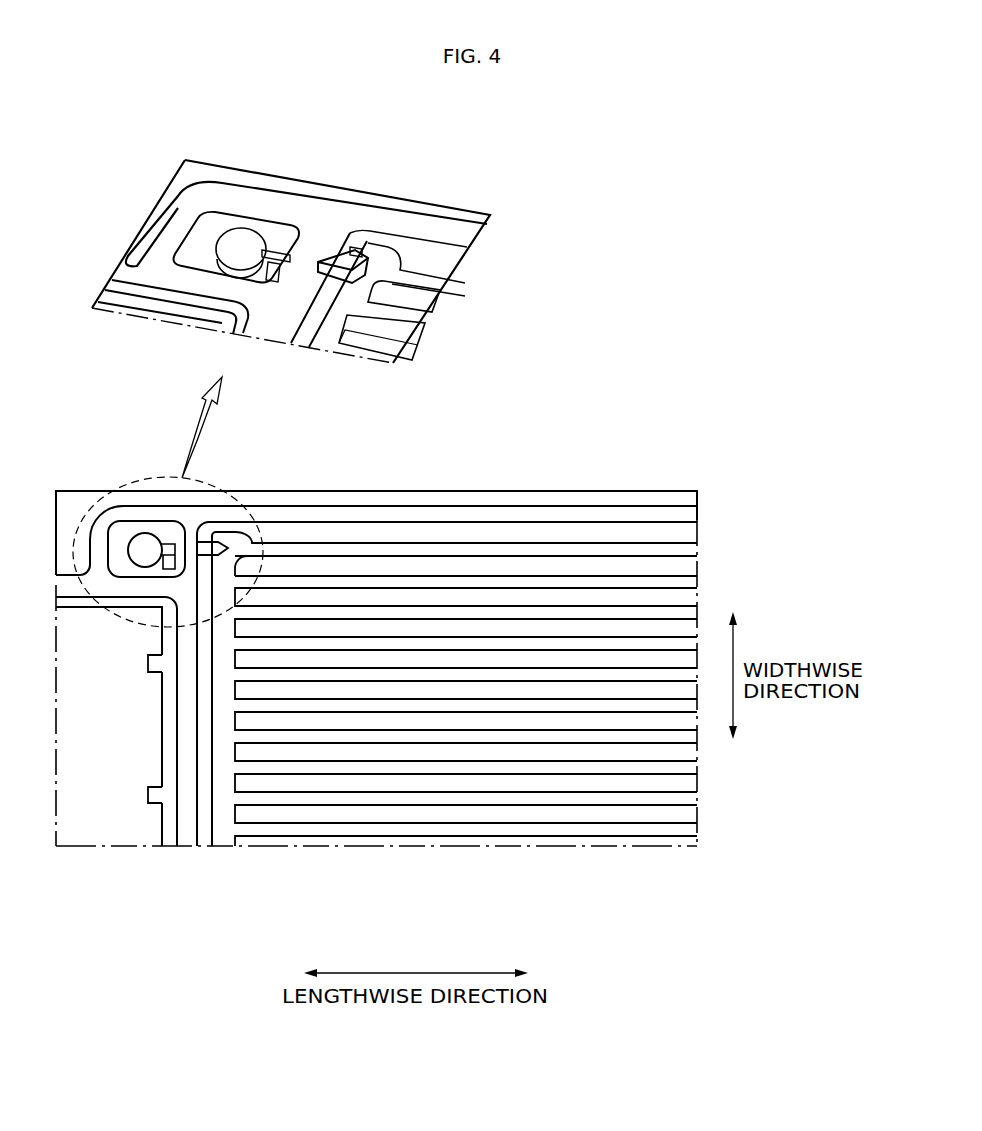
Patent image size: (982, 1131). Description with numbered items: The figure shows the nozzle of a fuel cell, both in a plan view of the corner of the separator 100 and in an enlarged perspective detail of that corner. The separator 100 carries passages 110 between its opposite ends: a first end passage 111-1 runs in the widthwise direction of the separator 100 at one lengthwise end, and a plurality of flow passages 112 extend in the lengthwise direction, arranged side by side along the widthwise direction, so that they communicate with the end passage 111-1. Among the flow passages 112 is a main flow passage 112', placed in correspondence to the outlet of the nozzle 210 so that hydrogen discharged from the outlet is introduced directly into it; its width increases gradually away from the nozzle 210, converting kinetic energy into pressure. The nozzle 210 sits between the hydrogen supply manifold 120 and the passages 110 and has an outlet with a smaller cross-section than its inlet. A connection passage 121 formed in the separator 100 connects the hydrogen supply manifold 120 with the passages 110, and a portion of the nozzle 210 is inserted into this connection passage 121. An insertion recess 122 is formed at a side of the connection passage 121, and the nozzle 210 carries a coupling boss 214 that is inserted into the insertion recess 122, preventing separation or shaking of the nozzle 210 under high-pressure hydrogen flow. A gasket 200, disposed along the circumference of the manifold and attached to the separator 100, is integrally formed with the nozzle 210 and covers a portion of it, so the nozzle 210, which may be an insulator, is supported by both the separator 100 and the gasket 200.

The separator 100 is at (652, 478).
The passages 110 is at (636, 798).
The first end passage 111-1 is at (222, 846).
The flow passages 112 is at (466, 604).
The main flow passage 112' is at (466, 399).
The hydrogen supply manifold 120 is at (237, 255).
The connection passage 121 is at (241, 253).
The insertion recess 122 is at (275, 278).
The gasket 200 is at (135, 513).
The nozzle 210 is at (362, 253).
The coupling boss 214 is at (277, 247).